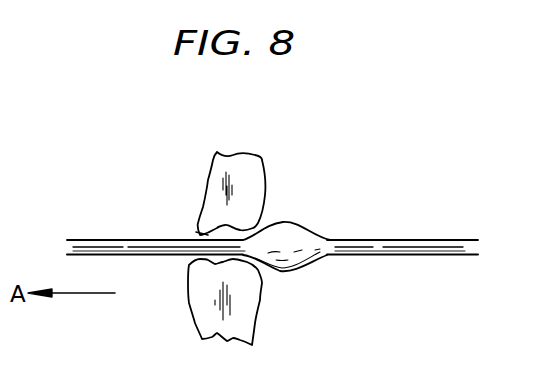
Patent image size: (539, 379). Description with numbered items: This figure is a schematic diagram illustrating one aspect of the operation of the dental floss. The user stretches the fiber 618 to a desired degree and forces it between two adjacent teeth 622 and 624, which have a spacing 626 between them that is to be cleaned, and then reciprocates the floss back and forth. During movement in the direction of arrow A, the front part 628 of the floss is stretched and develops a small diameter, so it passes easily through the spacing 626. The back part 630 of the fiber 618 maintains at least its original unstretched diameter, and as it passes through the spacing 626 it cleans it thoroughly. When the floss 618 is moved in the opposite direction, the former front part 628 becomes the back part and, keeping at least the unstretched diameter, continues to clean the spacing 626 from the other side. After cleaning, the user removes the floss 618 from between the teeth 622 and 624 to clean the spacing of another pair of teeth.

The fiber 618 is at (421, 153).
The tooth 622 is at (252, 188).
The tooth 624 is at (242, 298).
The spacing 626 is at (209, 235).
The front part 628 is at (110, 240).
The back part 630 is at (296, 236).